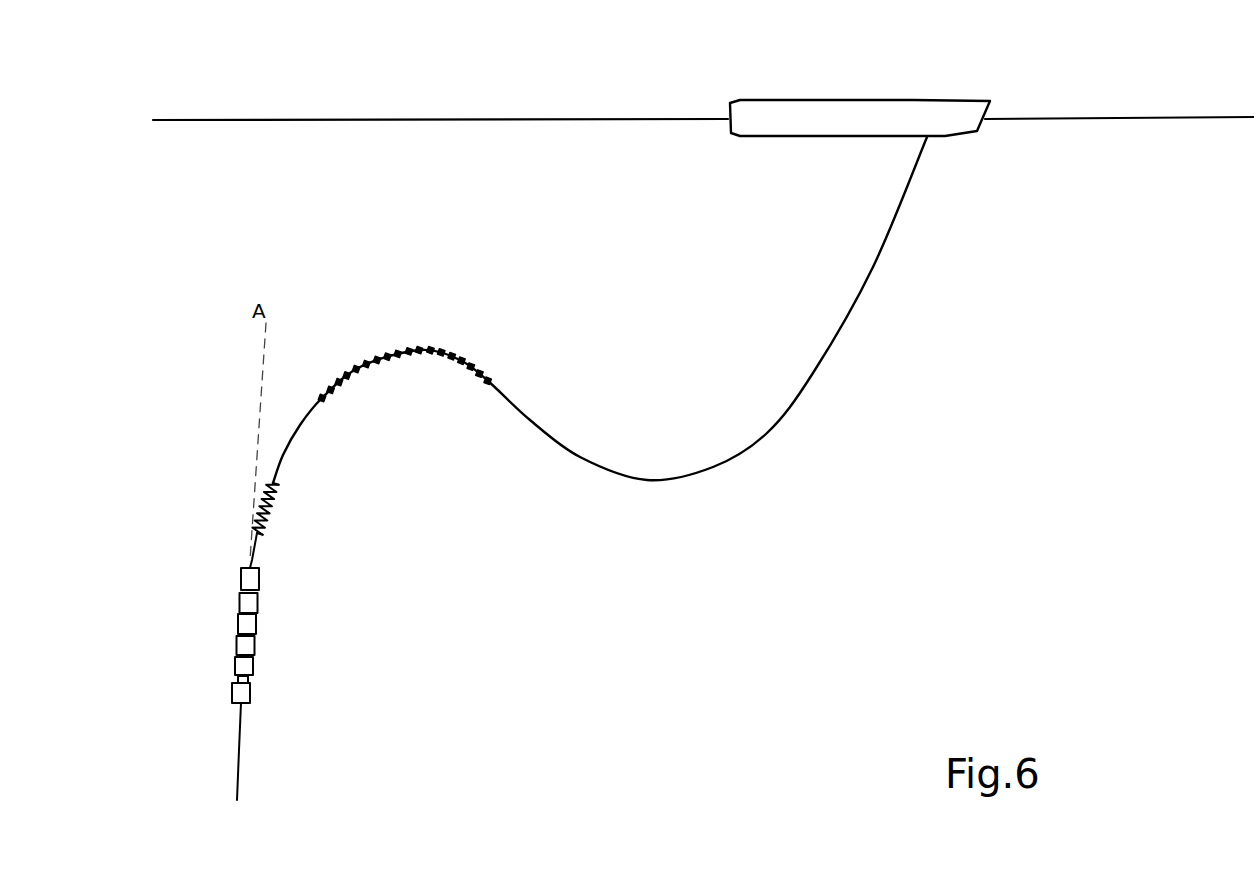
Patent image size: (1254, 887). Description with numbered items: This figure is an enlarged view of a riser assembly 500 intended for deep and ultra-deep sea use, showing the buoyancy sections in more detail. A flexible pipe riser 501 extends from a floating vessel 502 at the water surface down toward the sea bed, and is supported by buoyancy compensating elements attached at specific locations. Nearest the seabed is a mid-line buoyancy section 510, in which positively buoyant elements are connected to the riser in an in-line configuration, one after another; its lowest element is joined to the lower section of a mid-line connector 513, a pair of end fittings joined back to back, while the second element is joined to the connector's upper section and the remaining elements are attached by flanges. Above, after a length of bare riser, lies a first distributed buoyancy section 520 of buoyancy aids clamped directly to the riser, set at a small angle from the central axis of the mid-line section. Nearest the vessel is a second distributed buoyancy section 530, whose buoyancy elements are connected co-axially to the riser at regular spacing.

The riser assembly 500 is at (185, 340).
The riser 501 is at (767, 433).
The vessel 502 is at (947, 98).
The mid-line buoyancy section 510 is at (273, 646).
The mid-line connector 513 is at (250, 678).
The first distributed buoyancy section 520 is at (280, 512).
The second distributed buoyancy section 530 is at (430, 342).